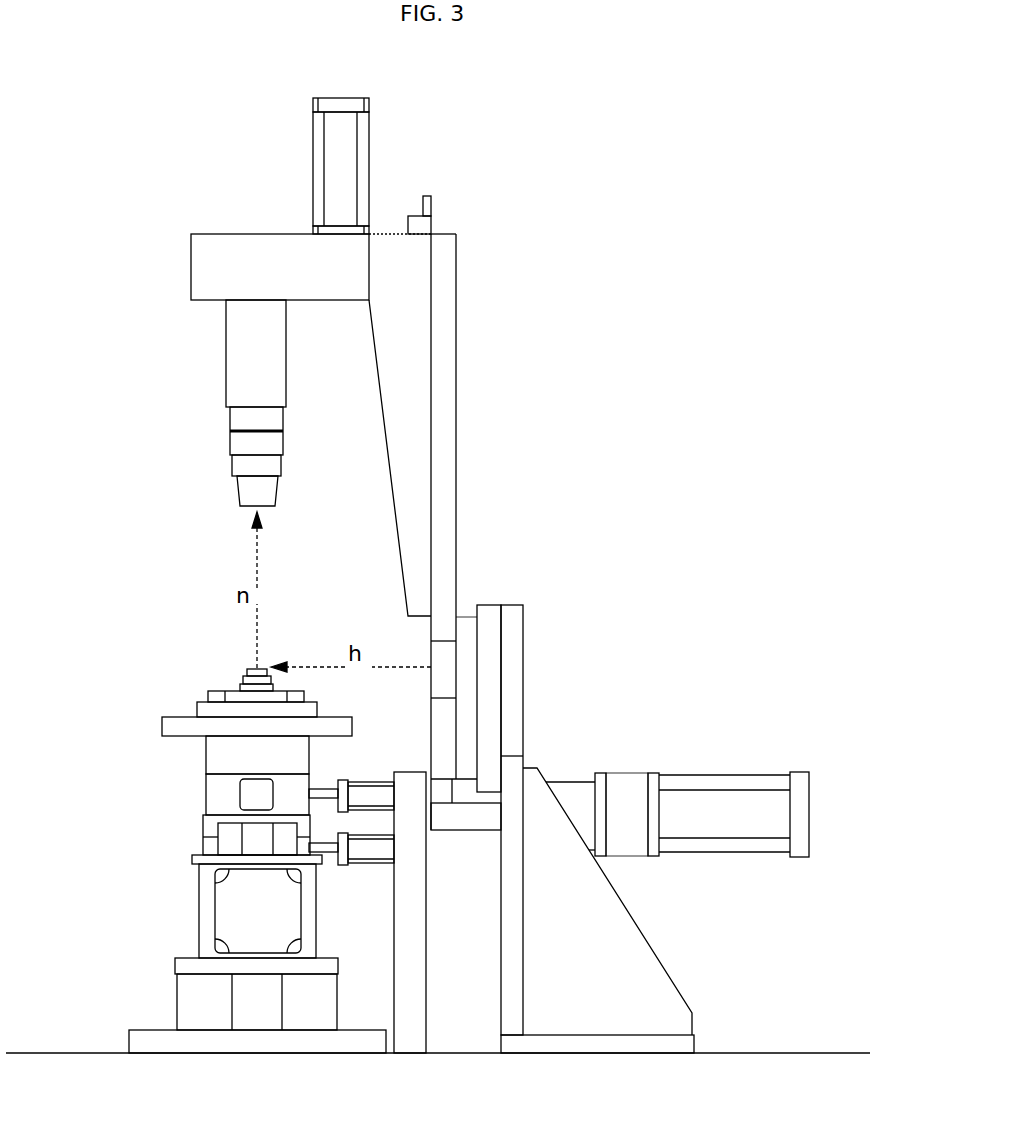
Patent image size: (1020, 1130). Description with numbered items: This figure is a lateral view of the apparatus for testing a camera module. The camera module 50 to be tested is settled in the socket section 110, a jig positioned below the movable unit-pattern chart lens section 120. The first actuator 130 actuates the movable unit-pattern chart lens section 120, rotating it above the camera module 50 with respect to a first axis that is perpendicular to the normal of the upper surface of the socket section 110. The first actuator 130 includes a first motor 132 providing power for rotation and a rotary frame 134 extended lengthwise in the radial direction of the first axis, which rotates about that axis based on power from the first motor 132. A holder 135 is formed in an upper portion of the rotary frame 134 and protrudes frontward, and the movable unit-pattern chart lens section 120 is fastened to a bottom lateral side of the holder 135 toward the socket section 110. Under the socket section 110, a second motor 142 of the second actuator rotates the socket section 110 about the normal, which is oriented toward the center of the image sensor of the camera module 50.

The camera module 50 is at (255, 670).
The socket section 110 is at (227, 693).
The movable unit-pattern chart lens section 120 is at (238, 352).
The first actuator 130 is at (665, 456).
The first motor 132 is at (632, 790).
The rotary frame 134 is at (408, 455).
The holder 135 is at (222, 252).
The second motor 142 is at (220, 753).